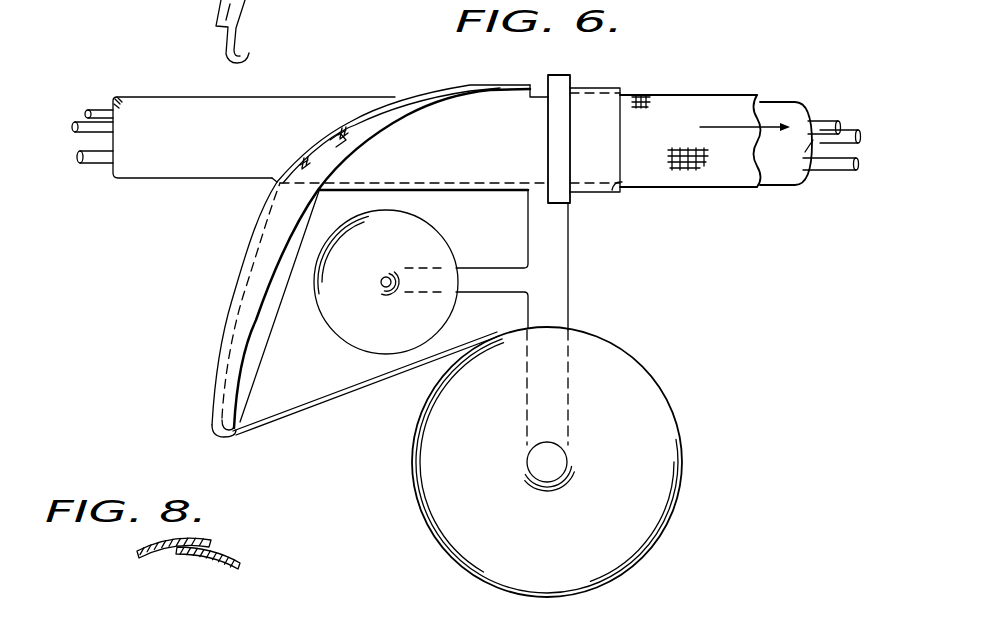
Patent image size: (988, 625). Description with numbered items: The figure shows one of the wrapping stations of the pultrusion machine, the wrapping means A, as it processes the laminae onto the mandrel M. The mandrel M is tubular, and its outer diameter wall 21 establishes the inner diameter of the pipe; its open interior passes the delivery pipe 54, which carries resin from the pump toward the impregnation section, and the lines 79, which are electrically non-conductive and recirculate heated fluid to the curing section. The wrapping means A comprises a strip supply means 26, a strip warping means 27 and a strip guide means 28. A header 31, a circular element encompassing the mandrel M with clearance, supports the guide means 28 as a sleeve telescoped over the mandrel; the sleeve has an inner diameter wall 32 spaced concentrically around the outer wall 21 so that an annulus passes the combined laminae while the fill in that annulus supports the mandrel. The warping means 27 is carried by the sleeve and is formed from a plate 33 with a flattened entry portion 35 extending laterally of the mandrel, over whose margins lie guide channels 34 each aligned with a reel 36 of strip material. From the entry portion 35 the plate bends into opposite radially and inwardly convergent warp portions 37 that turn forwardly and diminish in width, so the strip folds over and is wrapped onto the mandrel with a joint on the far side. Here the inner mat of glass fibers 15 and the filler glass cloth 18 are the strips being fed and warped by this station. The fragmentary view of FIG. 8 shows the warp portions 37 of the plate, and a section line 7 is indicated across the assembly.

In FIG. 6, the section line 7- 7 is at (97, 68).
In FIG. 6, the inner mat of glass fibers 15 is at (316, 404).
In FIG. 6, the filler glass cloth 18 is at (275, 344).
In FIG. 6, the outer diameter wall 21 is at (296, 97).
In FIG. 6, the strip supply means 26 is at (682, 402).
In FIG. 6, the strip warping means 27 is at (244, 272).
In FIG. 8, the strip warping means 27 is at (152, 576).
In FIG. 6, the strip guide means 28 is at (627, 85).
In FIG. 6, the header 31 is at (570, 77).
In FIG. 6, the inner diameter wall 32 is at (622, 187).
In FIG. 6, the plate 33 is at (211, 37).
In FIG. 6, the guide channels 34 is at (240, 346).
In FIG. 6, the entry portion 35 is at (268, 220).
In FIG. 6, the reel 36 is at (552, 491).
In FIG. 6, the warp portions 37 is at (407, 94).
In FIG. 8, the warp portions 37 is at (143, 543).
In FIG. 6, the delivery pipe 54 is at (84, 133).
In FIG. 6, the lines 79 is at (850, 164).
In FIG. 6, the wrapping means A is at (222, 324).
In FIG. 6, the mandrel M is at (200, 185).